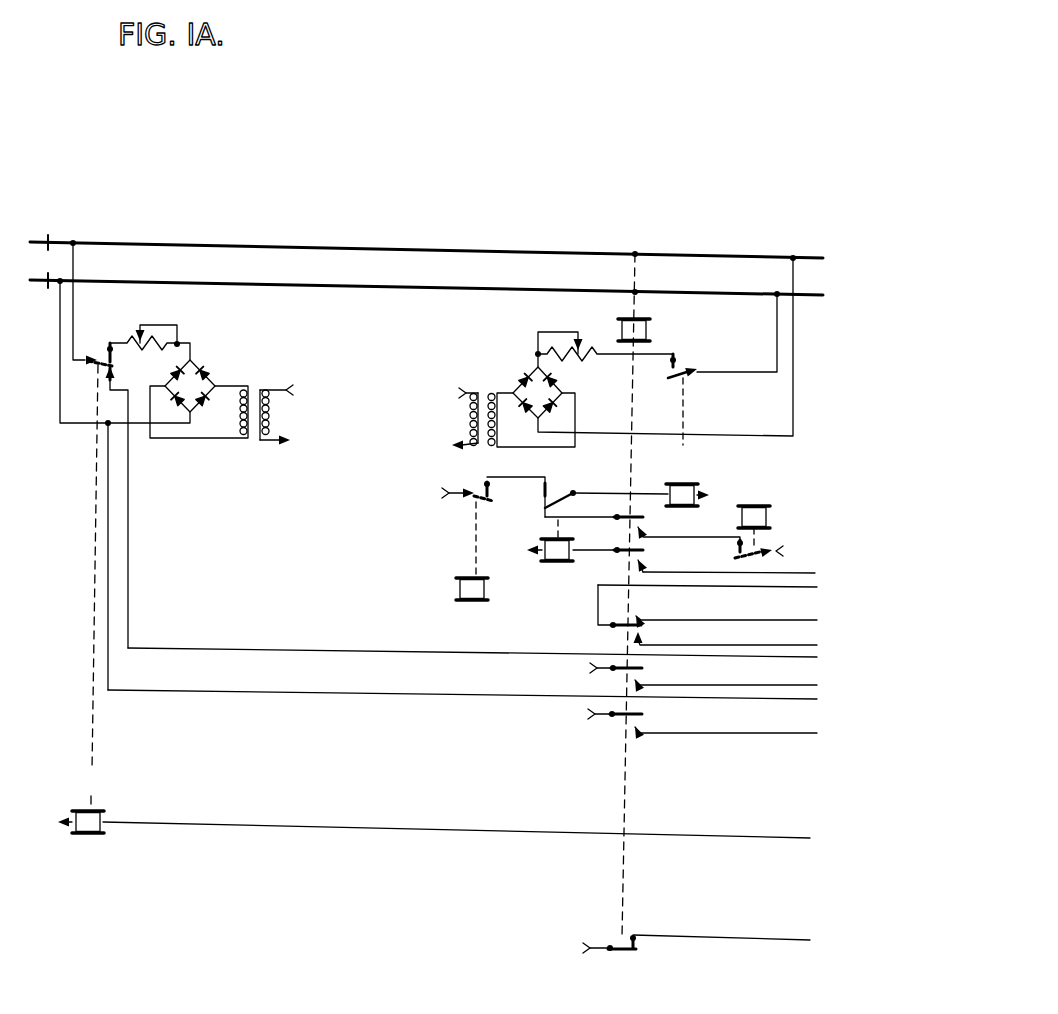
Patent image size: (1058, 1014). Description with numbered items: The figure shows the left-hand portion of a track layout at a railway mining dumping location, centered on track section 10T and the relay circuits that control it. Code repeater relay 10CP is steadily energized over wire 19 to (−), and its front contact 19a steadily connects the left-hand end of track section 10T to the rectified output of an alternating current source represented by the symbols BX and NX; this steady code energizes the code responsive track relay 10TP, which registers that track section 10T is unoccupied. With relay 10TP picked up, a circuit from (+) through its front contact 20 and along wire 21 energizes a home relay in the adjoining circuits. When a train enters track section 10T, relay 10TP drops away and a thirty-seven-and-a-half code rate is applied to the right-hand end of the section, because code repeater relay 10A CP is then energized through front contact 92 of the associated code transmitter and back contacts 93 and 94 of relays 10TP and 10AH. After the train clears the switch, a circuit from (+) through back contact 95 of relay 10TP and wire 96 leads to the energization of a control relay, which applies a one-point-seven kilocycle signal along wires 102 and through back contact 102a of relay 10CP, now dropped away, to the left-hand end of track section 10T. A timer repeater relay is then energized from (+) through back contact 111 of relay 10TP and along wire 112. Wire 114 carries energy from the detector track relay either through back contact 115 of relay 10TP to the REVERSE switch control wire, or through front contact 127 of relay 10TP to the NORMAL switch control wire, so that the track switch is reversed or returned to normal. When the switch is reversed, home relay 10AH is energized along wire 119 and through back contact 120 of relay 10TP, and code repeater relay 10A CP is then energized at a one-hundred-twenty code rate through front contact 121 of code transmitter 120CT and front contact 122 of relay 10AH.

The track section 10T is at (470, 288).
The code responsive track relay 10TP is at (633, 595).
The front contact of code repeater relay 10CP 19a is at (108, 348).
The back contact of code repeater relay 10CP 102a is at (113, 377).
The alternating current source terminal symbol BX is at (369, 393).
The alternating current source terminal symbol NX is at (369, 442).
The code repeater relay 10A is at (652, 430).
The front contact of code transmitter 120CT 121 is at (486, 483).
The code transmitter 120CT is at (471, 551).
The front contact of relay 10AH 122 is at (549, 484).
The back contact of relay 10AH 94 is at (557, 508).
The back contact of relay 10TP 93 is at (644, 527).
The front contact of code transmitter 37½ CT 92 is at (739, 546).
The home relay 10AH is at (562, 563).
The back contact of track relay 10TP 120 is at (644, 560).
The wire 119 is at (772, 574).
The front contact of track relay 10TP 127 is at (707, 606).
The wire 114 is at (815, 590).
The back contact of track relay 10TP 115 is at (637, 638).
The back contact of track relay 10TP 111 is at (643, 677).
The wire 112 is at (777, 689).
The wires 102 is at (708, 657).
The back contact of track relay 10TP 95 is at (642, 723).
The wire 96 is at (790, 737).
The code repeater relay 10CP is at (75, 599).
The wire 19 is at (792, 841).
The front contact of relay 10TP 20 is at (636, 944).
The wire 21 is at (788, 942).